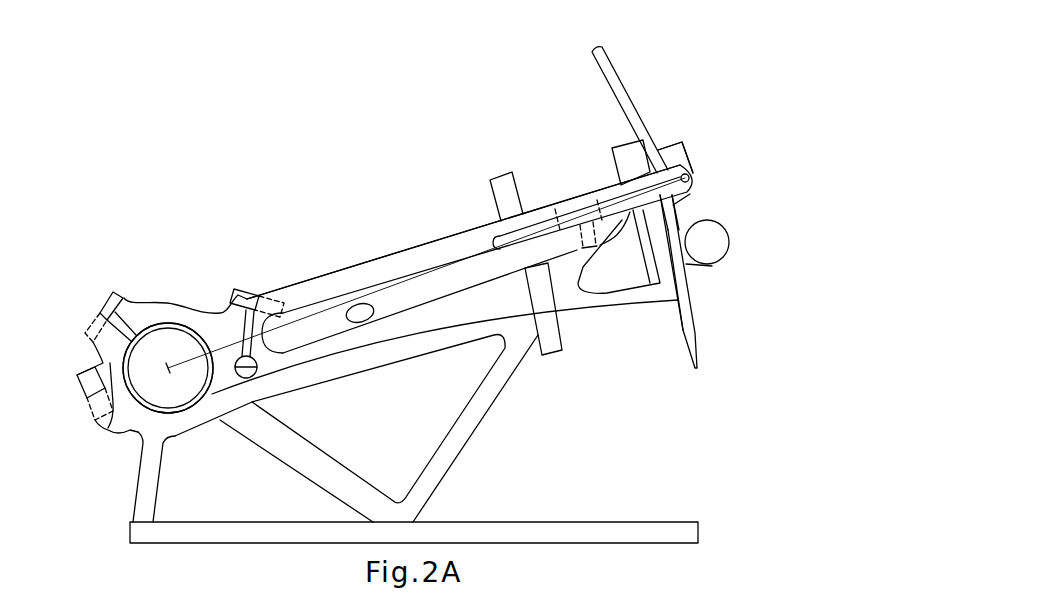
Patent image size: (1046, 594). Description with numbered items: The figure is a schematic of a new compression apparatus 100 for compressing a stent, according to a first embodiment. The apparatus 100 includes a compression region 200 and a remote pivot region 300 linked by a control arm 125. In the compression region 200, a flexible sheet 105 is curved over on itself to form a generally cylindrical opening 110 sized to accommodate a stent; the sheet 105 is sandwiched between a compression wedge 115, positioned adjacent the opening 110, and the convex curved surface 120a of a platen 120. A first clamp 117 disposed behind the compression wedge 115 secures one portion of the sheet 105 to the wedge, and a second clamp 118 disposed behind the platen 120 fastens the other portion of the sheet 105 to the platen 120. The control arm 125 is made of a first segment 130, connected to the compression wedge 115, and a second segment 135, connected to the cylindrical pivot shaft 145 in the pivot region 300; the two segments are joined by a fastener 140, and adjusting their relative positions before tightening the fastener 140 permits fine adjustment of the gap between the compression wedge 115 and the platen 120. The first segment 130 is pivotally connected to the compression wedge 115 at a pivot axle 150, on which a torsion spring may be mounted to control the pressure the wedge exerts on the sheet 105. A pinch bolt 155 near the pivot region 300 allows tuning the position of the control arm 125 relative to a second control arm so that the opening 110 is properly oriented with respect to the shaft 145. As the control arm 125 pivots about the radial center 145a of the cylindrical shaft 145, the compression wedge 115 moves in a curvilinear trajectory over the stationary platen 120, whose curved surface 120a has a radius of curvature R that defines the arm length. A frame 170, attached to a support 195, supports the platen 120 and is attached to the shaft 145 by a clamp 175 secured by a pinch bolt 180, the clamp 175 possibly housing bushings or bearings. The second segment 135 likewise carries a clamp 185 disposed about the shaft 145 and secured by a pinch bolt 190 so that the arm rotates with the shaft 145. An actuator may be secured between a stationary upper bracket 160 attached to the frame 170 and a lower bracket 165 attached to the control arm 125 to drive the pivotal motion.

The compression apparatus 100 is at (170, 163).
The flexible sheet 105 is at (698, 270).
The generally cylindrical opening 110 is at (710, 243).
The compression wedge 115 is at (683, 204).
The first clamp 117 is at (680, 148).
The second clamp 118 is at (627, 158).
The platen 120 is at (692, 330).
The curved surface 120a is at (690, 290).
The control arm 125 is at (377, 255).
The first segment 130 is at (542, 220).
The second segment 135 is at (300, 363).
The fastener 140 is at (594, 250).
The cylindrical pivot shaft 145 is at (175, 325).
The radial center 145a is at (170, 367).
The pivot axle 150 is at (692, 176).
The pinch bolt 155 is at (257, 288).
The stationary upper bracket 160 is at (508, 165).
The lower bracket 165 is at (550, 356).
The frame 170 is at (470, 465).
The clamp 175 is at (80, 385).
The pinch bolt 180 is at (80, 367).
The clamp 185 is at (137, 307).
The pinch bolt 190 is at (120, 292).
The support 195 is at (110, 427).
The compression region 200 is at (699, 58).
The remote pivot region 300 is at (78, 265).